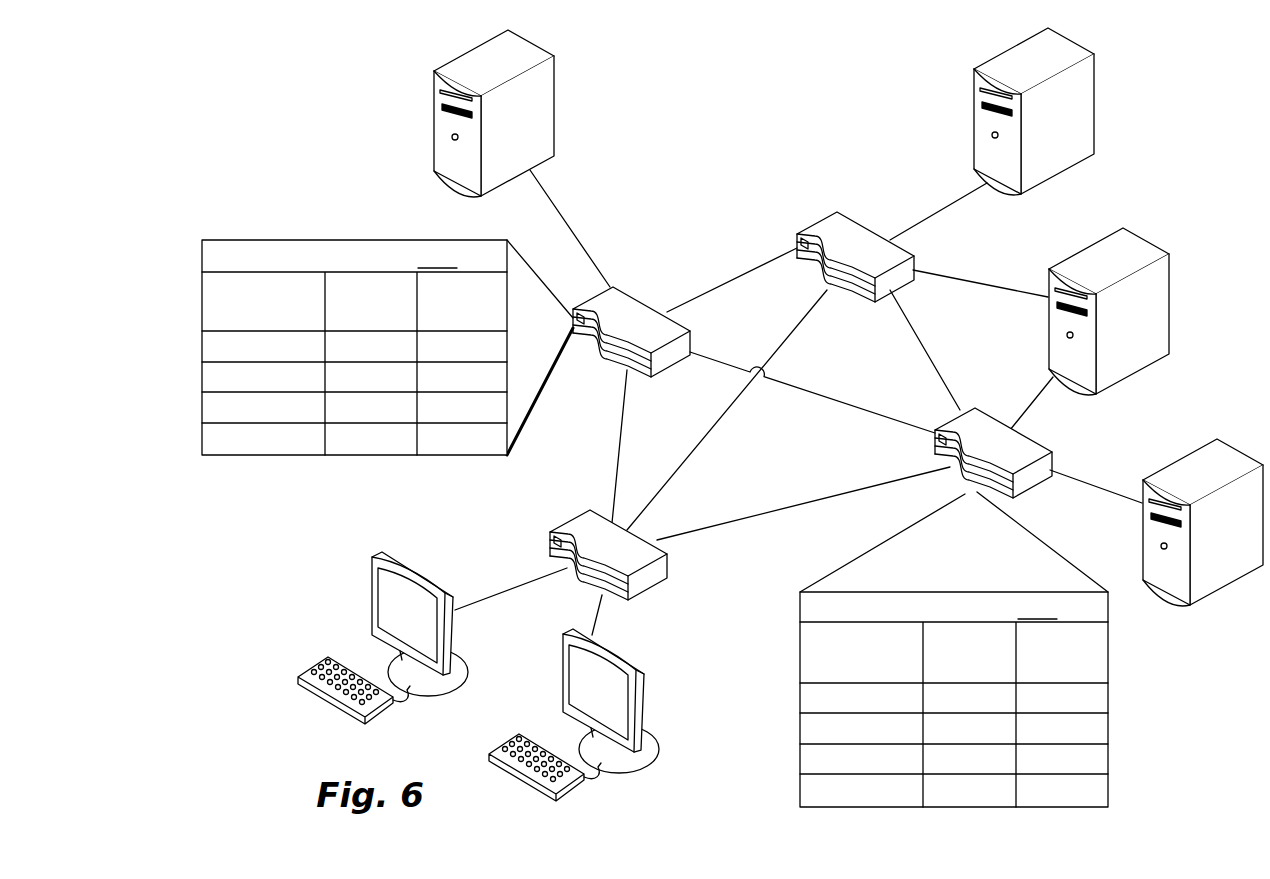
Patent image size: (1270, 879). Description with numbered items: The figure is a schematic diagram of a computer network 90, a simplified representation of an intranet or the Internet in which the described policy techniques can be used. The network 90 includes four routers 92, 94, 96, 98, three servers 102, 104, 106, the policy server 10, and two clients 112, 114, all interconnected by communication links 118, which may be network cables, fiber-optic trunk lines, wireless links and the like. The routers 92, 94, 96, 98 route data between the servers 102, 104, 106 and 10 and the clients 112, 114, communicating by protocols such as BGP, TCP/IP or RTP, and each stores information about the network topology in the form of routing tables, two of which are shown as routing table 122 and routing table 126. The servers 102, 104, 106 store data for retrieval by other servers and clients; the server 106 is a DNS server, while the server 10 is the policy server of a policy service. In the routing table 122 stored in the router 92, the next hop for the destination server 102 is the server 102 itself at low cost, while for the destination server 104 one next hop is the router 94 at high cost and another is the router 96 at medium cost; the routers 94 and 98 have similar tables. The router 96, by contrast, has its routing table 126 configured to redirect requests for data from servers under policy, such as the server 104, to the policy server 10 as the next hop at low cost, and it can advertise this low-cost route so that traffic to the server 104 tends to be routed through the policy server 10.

The computer network 90 is at (703, 118).
The policy server 10 is at (1115, 337).
The router 92 is at (614, 332).
The router 94 is at (837, 255).
The router 96 is at (974, 452).
The router 98 is at (589, 552).
The server 102 is at (494, 139).
The server 104 is at (1036, 139).
The server 106 is at (1203, 547).
The client 112 is at (388, 627).
The client 114 is at (579, 704).
The communication links 118 is at (760, 265).
The routing table 122 is at (387, 347).
The routing table 126 is at (954, 649).